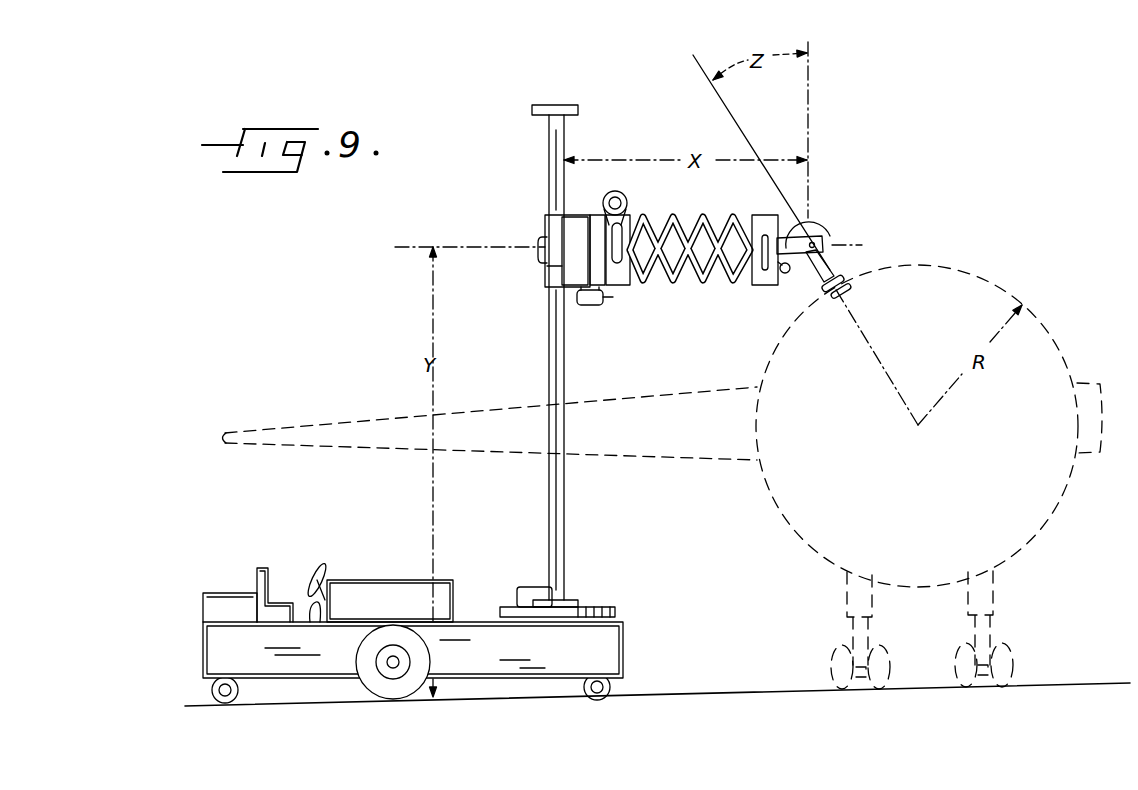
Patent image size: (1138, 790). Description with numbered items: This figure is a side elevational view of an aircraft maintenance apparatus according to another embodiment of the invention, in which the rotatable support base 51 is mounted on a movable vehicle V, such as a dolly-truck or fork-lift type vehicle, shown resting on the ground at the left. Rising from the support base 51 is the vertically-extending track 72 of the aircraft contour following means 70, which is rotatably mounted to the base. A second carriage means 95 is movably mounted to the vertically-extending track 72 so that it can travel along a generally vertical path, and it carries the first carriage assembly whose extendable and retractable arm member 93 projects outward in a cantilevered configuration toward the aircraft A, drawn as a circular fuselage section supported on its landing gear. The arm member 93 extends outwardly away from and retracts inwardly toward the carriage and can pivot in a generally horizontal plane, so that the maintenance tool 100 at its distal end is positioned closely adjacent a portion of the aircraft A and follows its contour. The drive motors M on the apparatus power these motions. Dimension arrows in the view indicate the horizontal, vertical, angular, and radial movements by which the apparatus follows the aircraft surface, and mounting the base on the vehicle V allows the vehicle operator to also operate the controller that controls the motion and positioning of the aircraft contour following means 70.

The support base 51 is at (604, 606).
The aircraft contour following means 70 is at (602, 388).
The vertically-extending track 72 is at (570, 540).
The extendable and retractable arm member 93 is at (670, 283).
The second carriage means 95 is at (534, 275).
The maintenance tool 100 is at (852, 266).
The aircraft A is at (816, 560).
The motor M is at (528, 587).
The movable vehicle V is at (541, 670).